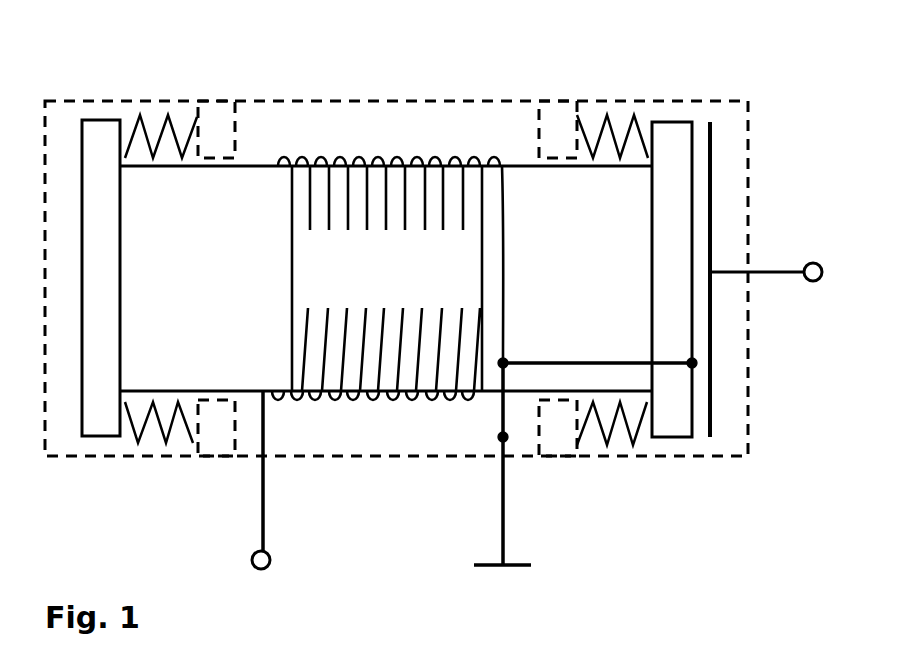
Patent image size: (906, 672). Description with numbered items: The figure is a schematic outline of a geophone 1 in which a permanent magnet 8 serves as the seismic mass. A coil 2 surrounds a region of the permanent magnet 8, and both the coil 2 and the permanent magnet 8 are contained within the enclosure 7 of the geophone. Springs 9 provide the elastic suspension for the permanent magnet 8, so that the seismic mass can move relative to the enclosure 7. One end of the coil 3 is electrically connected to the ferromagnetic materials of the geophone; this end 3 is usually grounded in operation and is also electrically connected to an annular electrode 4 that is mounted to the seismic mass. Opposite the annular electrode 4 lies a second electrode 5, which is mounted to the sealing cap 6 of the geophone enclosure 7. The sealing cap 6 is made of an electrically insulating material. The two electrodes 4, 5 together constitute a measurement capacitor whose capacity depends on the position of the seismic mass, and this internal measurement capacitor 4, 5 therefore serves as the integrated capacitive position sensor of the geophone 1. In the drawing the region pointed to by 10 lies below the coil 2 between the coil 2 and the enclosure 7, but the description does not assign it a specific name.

The geophone 1 is at (662, 73).
The coil 2 is at (376, 415).
The end of the coil 3 is at (497, 384).
The annular electrode 4 is at (690, 449).
The second electrode 5 is at (732, 202).
The sealing cap 6 is at (758, 381).
The enclosure 7 is at (295, 90).
The permanent magnet 8 is at (556, 241).
The springs 9 is at (152, 456).
The gap region 10 is at (421, 442).